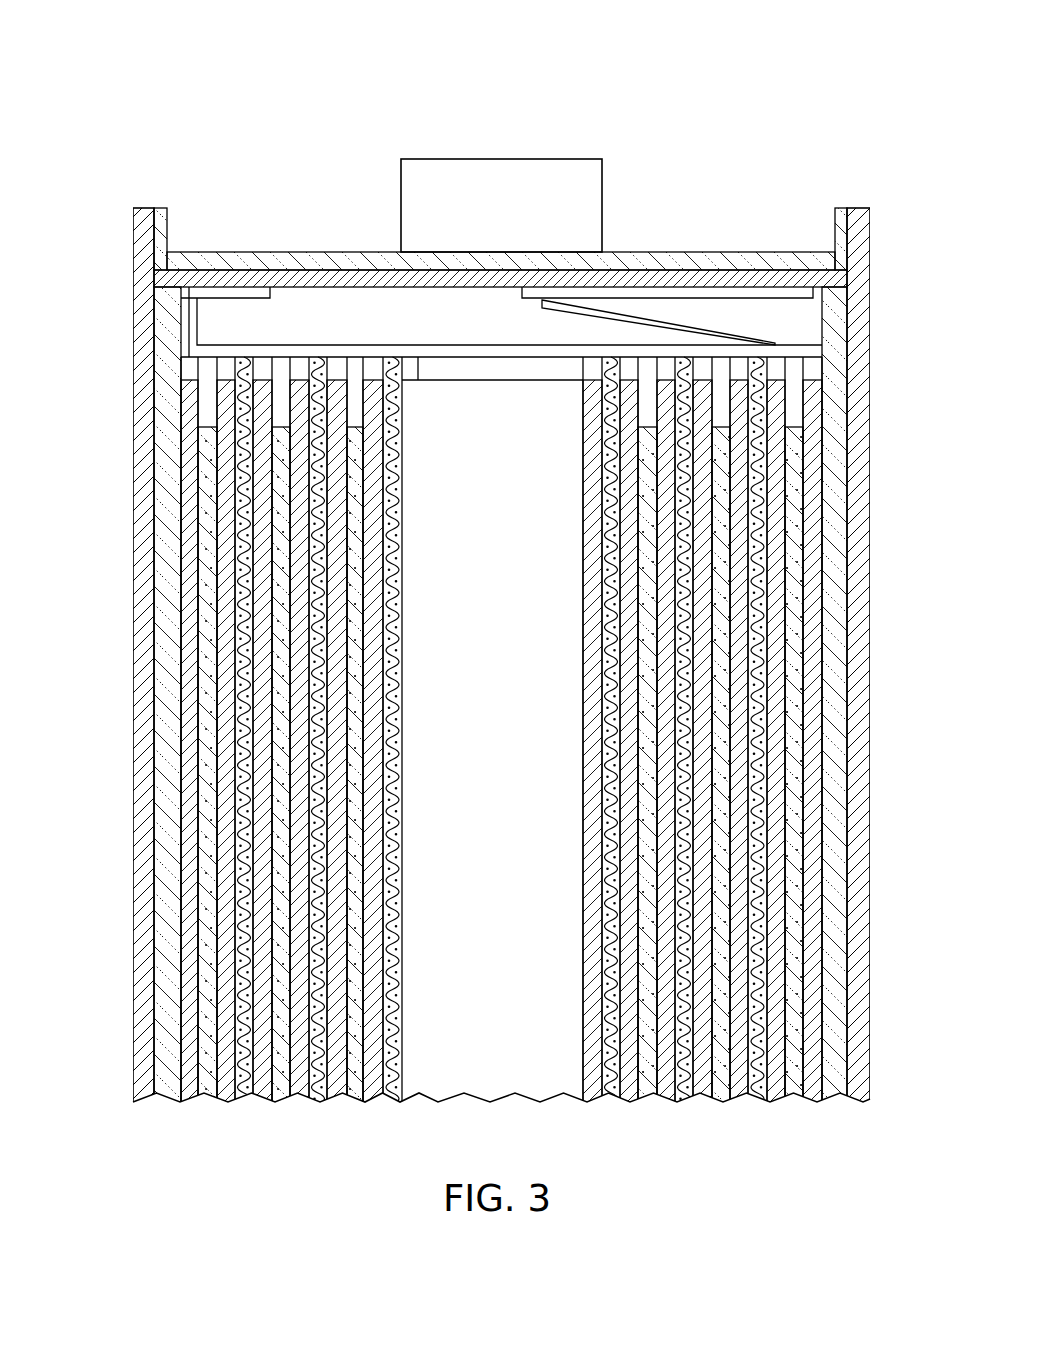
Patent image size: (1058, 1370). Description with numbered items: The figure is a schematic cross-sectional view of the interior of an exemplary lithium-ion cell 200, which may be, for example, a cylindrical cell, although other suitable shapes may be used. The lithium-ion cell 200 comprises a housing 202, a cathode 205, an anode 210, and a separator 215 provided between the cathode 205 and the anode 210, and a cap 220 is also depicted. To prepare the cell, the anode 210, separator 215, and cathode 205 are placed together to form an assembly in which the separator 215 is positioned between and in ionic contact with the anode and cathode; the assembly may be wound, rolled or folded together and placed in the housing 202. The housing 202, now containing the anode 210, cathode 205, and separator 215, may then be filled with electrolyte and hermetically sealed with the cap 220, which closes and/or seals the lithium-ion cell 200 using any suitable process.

The lithium-ion cell 200 is at (502, 591).
The housing 202 is at (137, 278).
The cathode 205 is at (760, 758).
The anode 210 is at (203, 520).
The separator 215 is at (182, 582).
The cap 220 is at (303, 252).